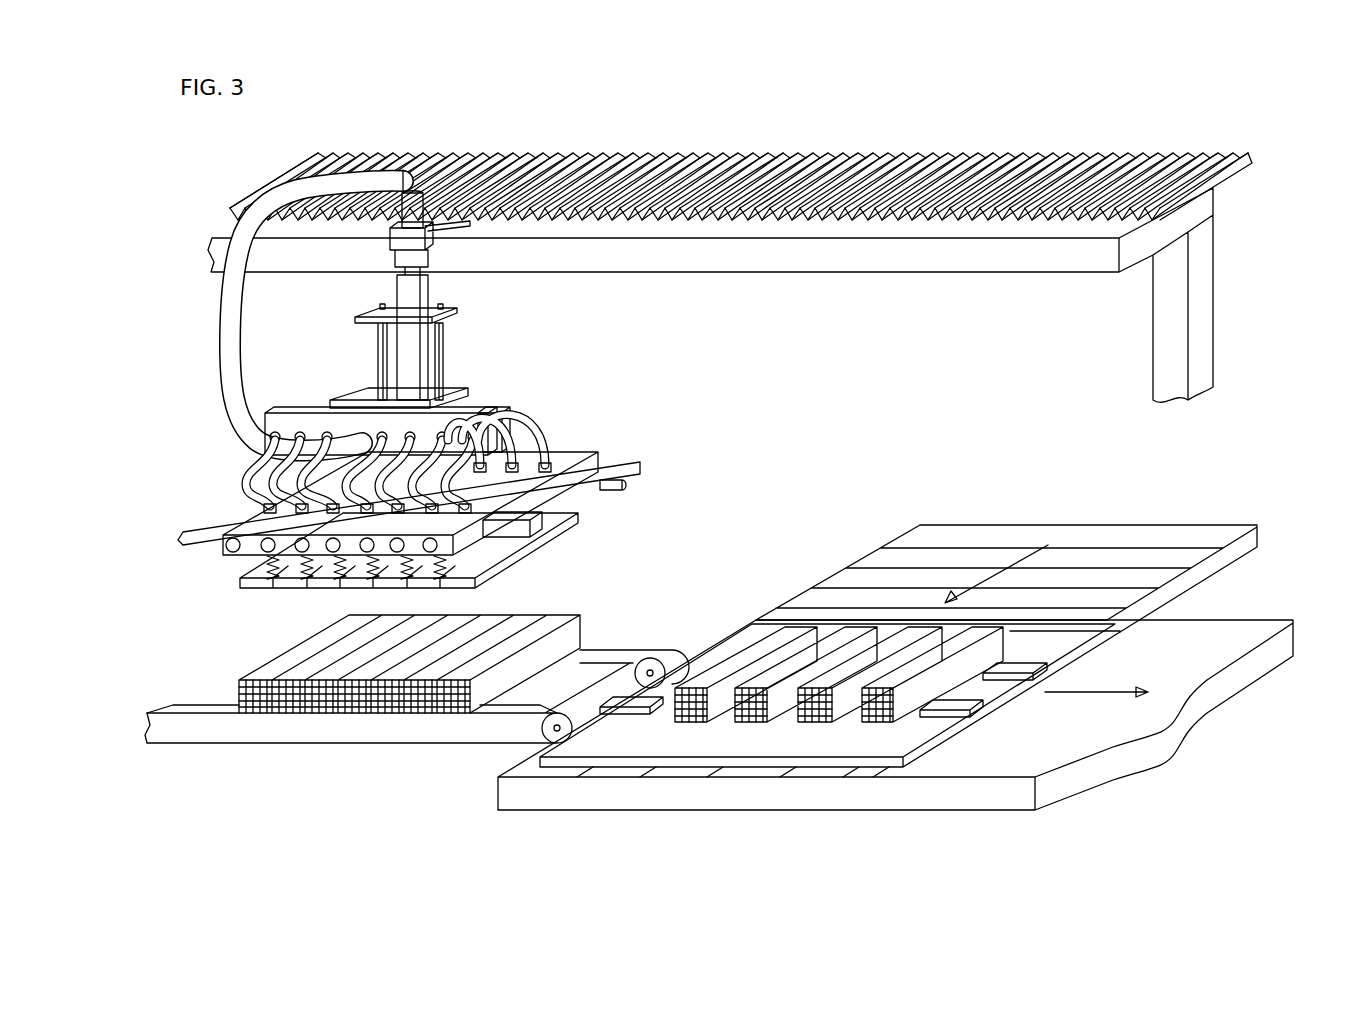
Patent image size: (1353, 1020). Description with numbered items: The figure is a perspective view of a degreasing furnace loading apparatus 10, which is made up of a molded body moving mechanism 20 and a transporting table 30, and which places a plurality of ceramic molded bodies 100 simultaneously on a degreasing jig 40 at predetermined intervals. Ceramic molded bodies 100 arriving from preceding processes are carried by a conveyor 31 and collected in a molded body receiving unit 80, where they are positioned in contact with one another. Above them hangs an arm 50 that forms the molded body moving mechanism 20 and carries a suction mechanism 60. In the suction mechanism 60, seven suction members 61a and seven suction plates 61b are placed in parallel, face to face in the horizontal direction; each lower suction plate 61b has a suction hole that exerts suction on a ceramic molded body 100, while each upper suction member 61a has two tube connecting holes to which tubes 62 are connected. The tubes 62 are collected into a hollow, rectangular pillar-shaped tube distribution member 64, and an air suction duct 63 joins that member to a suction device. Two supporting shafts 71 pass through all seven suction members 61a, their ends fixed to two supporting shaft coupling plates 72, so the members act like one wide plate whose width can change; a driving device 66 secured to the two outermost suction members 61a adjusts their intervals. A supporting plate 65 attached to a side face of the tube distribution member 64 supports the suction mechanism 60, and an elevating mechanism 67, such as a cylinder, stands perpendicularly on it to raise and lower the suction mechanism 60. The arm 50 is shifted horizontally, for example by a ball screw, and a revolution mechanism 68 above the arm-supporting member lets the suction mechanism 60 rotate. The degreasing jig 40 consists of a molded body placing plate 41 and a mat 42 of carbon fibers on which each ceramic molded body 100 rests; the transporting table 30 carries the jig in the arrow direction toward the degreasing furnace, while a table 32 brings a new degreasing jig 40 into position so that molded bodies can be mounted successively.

The degreasing furnace loading apparatus 10 is at (926, 110).
The molded body moving mechanism 20 is at (466, 140).
The transporting table 30 is at (1228, 637).
The conveyor 31 is at (213, 730).
The table 32 is at (852, 582).
The degreasing jig 40 is at (940, 757).
The molded body placing plate 41 is at (855, 748).
The mat 42 is at (967, 718).
The arm 50 is at (617, 350).
The suction mechanism 60 is at (578, 418).
The suction member 61a is at (590, 462).
The suction plate 61b is at (240, 580).
The tube 62 is at (547, 412).
The air suction duct 63 is at (216, 345).
The tube distribution member 64 is at (478, 420).
The supporting plate 65 is at (372, 407).
The driving device 66 is at (500, 563).
The elevating mechanism 67 is at (466, 327).
The revolution mechanism 68 is at (420, 217).
The supporting shaft 71 is at (622, 470).
The supporting shaft coupling plate 72 is at (598, 493).
The molded body receiving unit 80 is at (366, 765).
The ceramic molded body 100 is at (756, 655).